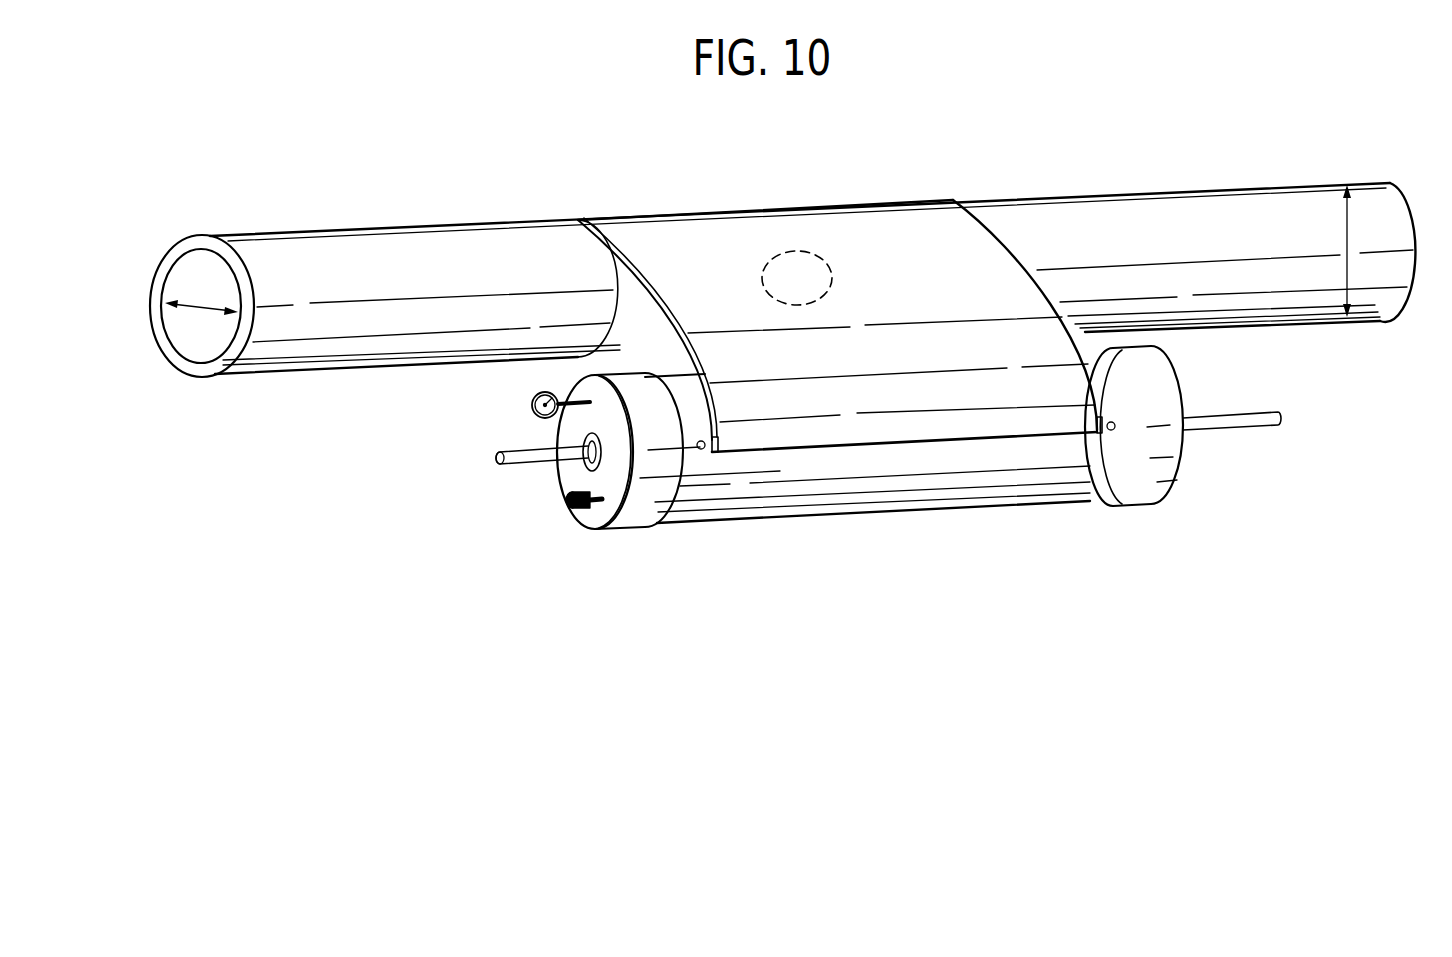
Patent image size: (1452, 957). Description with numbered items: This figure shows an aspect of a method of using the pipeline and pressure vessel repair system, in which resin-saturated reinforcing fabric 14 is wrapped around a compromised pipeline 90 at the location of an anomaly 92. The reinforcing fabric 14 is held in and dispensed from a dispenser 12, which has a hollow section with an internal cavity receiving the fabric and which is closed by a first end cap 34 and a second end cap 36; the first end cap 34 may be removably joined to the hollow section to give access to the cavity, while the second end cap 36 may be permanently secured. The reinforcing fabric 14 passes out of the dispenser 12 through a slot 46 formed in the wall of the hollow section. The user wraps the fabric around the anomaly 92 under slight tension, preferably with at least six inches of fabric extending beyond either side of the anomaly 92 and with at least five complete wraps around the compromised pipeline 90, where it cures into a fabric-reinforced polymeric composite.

The compromised pipeline 90 is at (442, 342).
The reinforcing fabric 14 is at (937, 230).
The anomaly 92 is at (798, 268).
The dispenser 12 is at (757, 468).
The first end cap 34 is at (640, 502).
The slot 46 is at (1067, 497).
The second end cap 36 is at (1157, 482).